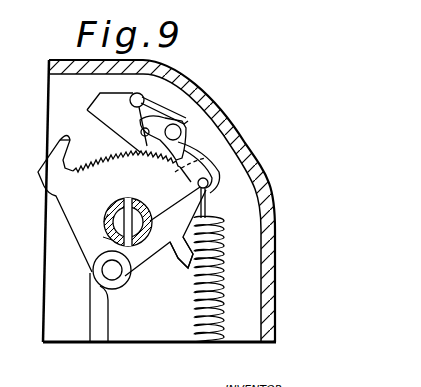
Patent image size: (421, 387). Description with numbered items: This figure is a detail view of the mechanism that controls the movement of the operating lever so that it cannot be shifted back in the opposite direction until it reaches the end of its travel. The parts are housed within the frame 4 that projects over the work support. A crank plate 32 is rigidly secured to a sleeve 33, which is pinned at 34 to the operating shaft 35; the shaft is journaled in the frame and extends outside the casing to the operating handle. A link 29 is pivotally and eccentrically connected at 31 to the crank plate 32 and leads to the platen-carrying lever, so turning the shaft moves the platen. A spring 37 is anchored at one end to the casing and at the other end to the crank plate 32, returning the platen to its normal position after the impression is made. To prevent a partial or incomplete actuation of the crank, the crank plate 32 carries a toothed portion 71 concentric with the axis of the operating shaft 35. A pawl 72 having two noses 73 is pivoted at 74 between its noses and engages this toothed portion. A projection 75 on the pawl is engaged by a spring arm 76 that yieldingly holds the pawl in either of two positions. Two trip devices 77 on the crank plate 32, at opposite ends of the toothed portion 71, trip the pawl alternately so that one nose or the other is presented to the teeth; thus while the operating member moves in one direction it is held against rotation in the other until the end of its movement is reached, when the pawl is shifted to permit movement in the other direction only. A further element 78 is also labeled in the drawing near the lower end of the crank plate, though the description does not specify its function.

The frame 4 is at (301, 304).
The link 29 is at (108, 330).
The pivotal eccentric connection 31 is at (114, 272).
The crank plate 32 is at (165, 231).
The sleeve 33 is at (110, 205).
The pin 34 is at (104, 220).
The operating shaft 35 is at (103, 237).
The spring 37 is at (223, 275).
The toothed portion 71 is at (90, 163).
The pawl 72 is at (144, 154).
The noses 73 is at (207, 155).
The pawl pivot 74 is at (185, 135).
The projection 75 is at (190, 112).
The spring arm 76 is at (178, 116).
The trip devices 77 is at (62, 150).
The projection 78 is at (176, 270).